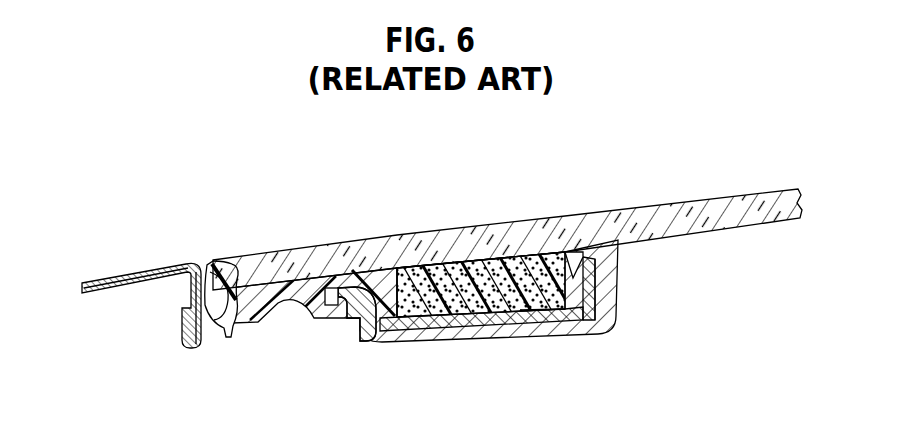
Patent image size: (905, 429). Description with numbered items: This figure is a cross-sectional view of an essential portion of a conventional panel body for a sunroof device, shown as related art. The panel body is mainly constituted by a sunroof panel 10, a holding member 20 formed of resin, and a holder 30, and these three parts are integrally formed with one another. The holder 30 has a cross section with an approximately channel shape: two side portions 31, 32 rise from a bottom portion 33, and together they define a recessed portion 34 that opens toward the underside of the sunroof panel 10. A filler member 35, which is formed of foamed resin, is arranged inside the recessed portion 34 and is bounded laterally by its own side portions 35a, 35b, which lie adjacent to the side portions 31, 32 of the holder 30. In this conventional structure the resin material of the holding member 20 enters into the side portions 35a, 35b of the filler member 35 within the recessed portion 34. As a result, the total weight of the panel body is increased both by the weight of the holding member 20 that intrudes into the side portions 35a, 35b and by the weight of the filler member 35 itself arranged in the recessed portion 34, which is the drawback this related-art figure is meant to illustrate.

The sunroof panel 10 is at (534, 216).
The holding member 20 is at (326, 321).
The holder 30 is at (477, 332).
The side portion 31 is at (353, 320).
The side portion 32 is at (591, 293).
The bottom portion 33 is at (437, 331).
The recessed portion 34 is at (537, 320).
The filler member 35 is at (464, 272).
The side portion of the filler member 35a is at (376, 280).
The side portion of the filler member 35b is at (575, 272).